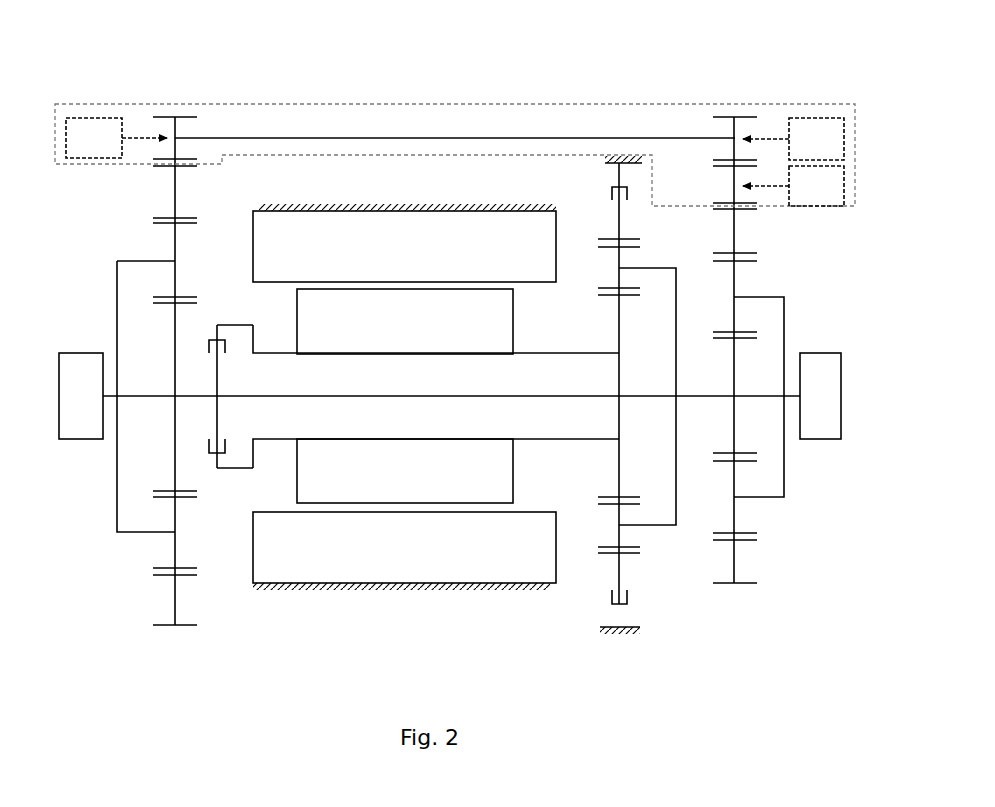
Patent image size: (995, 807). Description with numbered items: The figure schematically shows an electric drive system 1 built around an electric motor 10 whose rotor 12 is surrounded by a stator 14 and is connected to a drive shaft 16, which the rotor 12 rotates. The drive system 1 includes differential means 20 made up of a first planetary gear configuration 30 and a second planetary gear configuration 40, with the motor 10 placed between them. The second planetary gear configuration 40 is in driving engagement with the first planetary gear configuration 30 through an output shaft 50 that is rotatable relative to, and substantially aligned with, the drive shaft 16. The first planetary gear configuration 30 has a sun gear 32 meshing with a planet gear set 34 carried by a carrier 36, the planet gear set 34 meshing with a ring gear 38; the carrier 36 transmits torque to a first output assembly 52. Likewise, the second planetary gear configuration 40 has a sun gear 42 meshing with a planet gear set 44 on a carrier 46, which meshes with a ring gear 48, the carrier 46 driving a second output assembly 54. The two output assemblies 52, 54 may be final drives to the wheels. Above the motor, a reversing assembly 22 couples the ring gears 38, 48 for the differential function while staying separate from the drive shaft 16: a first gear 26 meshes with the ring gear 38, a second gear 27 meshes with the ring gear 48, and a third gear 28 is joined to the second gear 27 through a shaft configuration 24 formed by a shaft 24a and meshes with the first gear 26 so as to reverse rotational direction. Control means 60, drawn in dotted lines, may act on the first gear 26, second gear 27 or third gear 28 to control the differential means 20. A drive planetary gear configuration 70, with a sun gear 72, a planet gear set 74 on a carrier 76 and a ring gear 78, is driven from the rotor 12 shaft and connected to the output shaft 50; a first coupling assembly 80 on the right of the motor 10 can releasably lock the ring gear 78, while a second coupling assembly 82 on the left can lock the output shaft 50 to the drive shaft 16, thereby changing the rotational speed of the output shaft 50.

The electric drive system 1 is at (728, 44).
The electric motor 10 is at (524, 497).
The rotor 12 is at (405, 321).
The stator 14 is at (404, 397).
The drive shaft 16 is at (271, 444).
The differential means 20 is at (724, 89).
The reversing assembly 22 is at (115, 103).
The shaft configuration 24 is at (390, 140).
The shaft 24a is at (349, 118).
The first gear 26 is at (734, 188).
The second gear 27 is at (175, 130).
The third gear 28 is at (734, 126).
The first planetary gear configuration 30 is at (749, 521).
The sun gear 32 is at (733, 364).
The planet gear set 34 is at (735, 283).
The carrier 36 is at (784, 323).
The ring gear 38 is at (735, 230).
The second planetary gear configuration 40 is at (156, 546).
The sun gear 42 is at (175, 320).
The planet gear set 44 is at (175, 236).
The carrier 46 is at (117, 299).
The ring gear 48 is at (175, 195).
The output shaft 50 is at (352, 397).
The first output assembly 52 is at (818, 441).
The second output assembly 54 is at (78, 441).
The control means 60 is at (455, 162).
The drive planetary gear configuration 70 is at (227, 316).
The sun gear 72 is at (618, 320).
The planet gear set 74 is at (618, 267).
The carrier 76 is at (667, 528).
The ring gear 78 is at (619, 218).
The first coupling assembly 80 is at (617, 180).
The second coupling assembly 82 is at (214, 452).